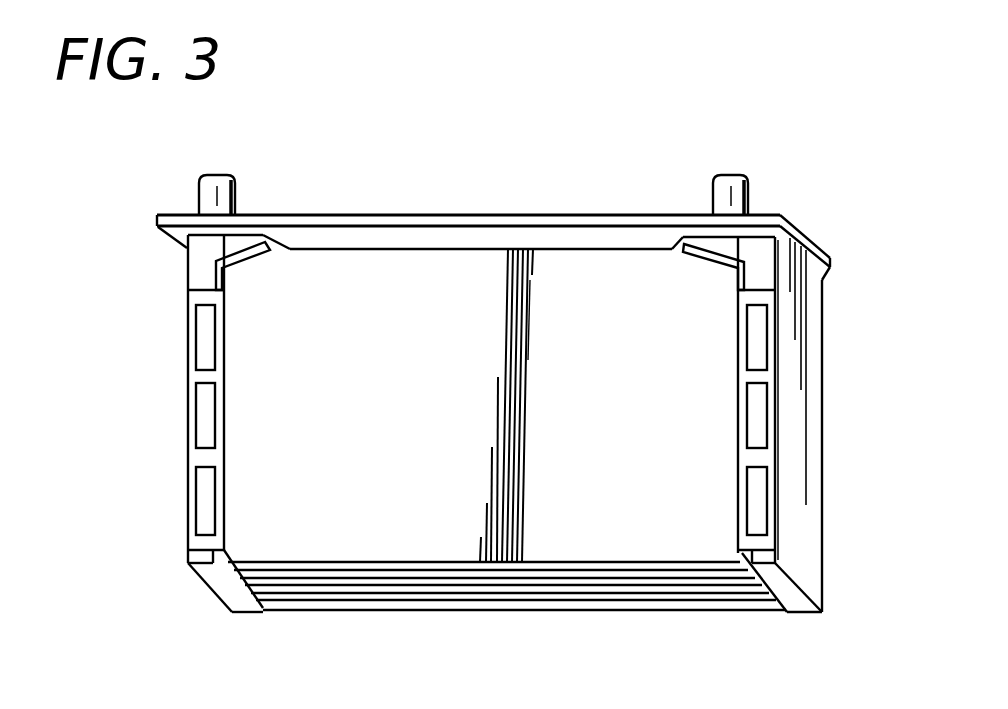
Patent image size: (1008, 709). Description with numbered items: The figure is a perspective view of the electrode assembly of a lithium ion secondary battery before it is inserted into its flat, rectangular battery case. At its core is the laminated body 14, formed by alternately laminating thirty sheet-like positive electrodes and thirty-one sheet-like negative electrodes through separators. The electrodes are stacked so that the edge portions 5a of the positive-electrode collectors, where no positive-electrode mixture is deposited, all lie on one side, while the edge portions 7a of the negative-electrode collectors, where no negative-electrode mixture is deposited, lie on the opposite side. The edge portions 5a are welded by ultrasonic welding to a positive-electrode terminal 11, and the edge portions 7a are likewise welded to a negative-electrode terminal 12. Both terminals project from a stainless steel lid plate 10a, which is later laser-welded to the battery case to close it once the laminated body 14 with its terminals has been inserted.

The lid plate 10a is at (480, 222).
The positive-electrode terminal 11 is at (749, 188).
The negative-electrode terminal 12 is at (236, 181).
The edge portions of the negative-electrode collectors 7a is at (197, 377).
The edge portions of the positive-electrode collectors 5a is at (758, 377).
The laminated body 14 is at (640, 545).